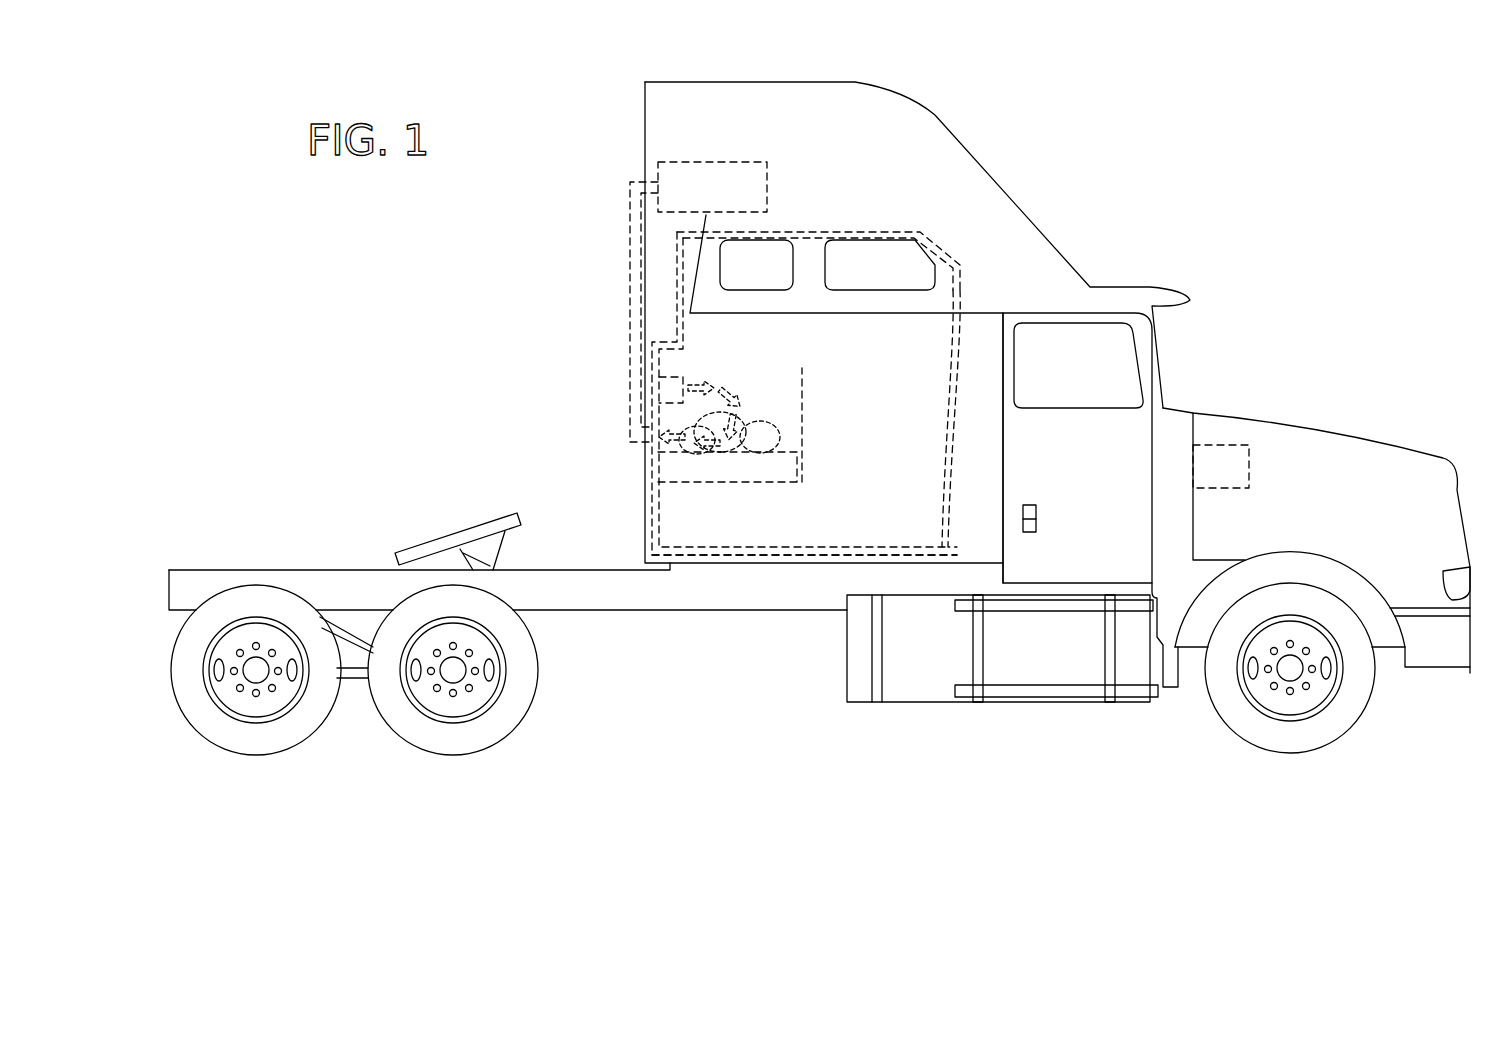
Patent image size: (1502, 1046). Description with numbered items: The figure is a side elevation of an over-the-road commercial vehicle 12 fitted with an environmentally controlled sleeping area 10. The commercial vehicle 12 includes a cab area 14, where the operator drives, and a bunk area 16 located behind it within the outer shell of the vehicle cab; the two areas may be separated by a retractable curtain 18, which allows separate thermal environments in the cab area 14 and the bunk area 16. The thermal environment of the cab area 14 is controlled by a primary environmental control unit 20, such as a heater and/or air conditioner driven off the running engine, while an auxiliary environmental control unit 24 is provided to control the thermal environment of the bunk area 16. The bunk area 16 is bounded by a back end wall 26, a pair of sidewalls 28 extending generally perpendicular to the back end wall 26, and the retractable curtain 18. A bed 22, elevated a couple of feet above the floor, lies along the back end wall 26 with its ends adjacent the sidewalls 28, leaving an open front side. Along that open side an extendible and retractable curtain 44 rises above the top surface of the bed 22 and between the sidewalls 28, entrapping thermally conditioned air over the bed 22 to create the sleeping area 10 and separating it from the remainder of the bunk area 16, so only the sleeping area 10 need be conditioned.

The environmentally controlled sleeping area 10 is at (730, 388).
The over-the-road commercial vehicle 12 is at (1153, 193).
The cab area 14 is at (1105, 347).
The bunk area 16 is at (903, 344).
The retractable curtain 18 is at (963, 340).
The primary environmental control unit 20 is at (1223, 452).
The bed 22 is at (673, 468).
The auxiliary environmental control unit 24 is at (712, 178).
The back end wall 26 is at (640, 433).
The sidewalls 28 is at (817, 527).
The curtain 44 is at (800, 377).